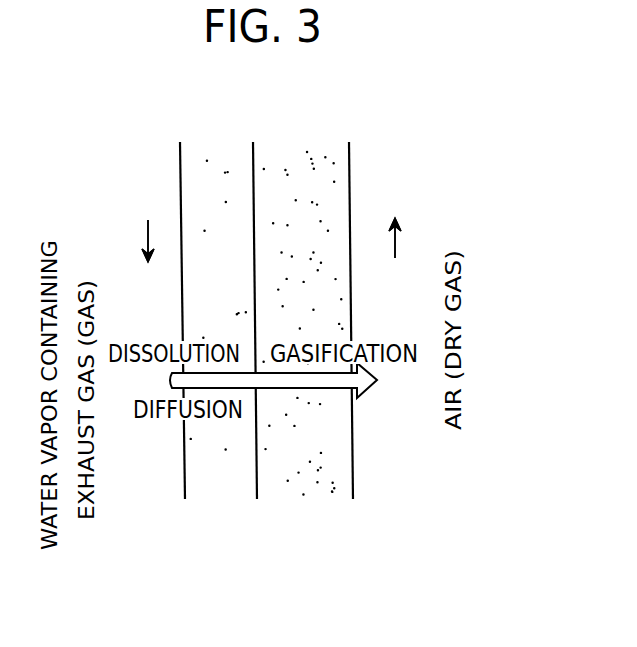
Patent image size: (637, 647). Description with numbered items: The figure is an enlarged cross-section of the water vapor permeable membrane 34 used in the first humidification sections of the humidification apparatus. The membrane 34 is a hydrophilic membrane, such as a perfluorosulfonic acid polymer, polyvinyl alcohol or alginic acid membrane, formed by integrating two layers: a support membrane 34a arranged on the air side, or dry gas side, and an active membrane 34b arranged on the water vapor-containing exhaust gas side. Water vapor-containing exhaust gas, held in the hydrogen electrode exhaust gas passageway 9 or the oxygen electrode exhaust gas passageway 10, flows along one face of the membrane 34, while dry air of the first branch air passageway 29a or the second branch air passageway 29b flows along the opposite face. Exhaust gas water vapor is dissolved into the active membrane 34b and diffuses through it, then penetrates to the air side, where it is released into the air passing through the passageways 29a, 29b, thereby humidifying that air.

The water vapor permeable membrane 34 is at (180, 157).
The support membrane 34a is at (324, 475).
The active membrane 34b is at (220, 475).
The hydrogen electrode exhaust gas passageway 9 is at (61, 212).
The oxygen electrode exhaust gas passageway 10 is at (104, 212).
The first branch air passageway 29a is at (442, 210).
The second branch air passageway 29b is at (512, 210).